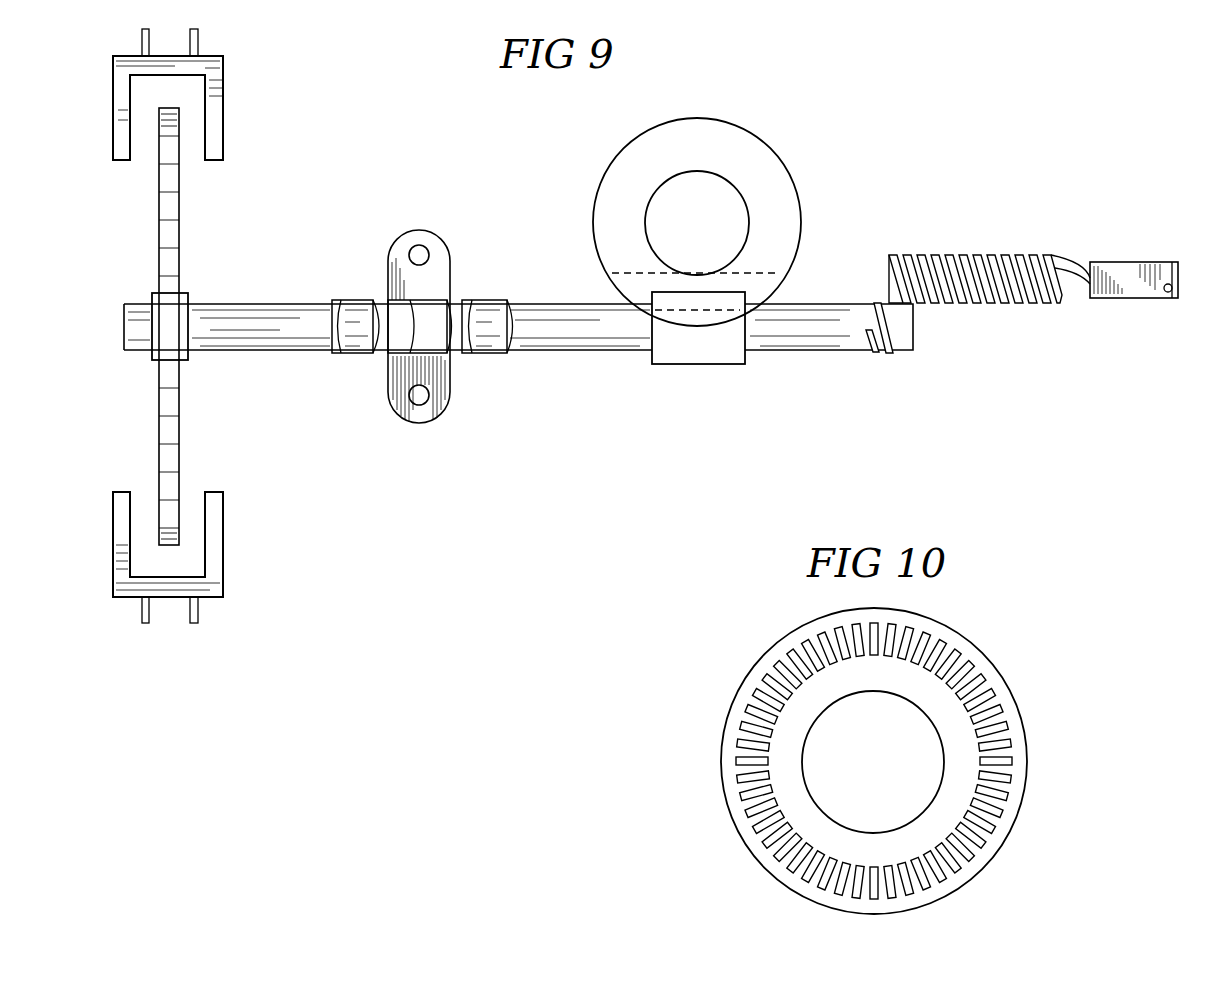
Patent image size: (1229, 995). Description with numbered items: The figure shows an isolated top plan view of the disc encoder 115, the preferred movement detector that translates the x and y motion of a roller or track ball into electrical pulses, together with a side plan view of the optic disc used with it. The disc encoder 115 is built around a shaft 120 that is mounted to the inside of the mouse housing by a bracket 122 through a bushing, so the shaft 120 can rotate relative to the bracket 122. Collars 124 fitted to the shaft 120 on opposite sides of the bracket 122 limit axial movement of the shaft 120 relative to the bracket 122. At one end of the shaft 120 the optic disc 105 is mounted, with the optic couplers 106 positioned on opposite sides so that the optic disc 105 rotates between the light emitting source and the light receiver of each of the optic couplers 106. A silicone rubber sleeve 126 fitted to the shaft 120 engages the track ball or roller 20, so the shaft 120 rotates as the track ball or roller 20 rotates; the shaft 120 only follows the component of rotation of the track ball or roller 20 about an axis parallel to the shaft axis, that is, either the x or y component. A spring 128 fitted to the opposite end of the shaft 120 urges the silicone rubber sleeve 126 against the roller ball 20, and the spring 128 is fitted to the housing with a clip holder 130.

In FIG. 9, the track ball or roller 20 is at (773, 147).
In FIG. 9, the optic disc 105 is at (157, 387).
In FIG. 10, the optic disc 105 is at (999, 674).
In FIG. 9, the optic couplers 106 is at (120, 97).
In FIG. 9, the disc encoder 115 is at (606, 375).
In FIG. 9, the shaft 120 is at (845, 340).
In FIG. 9, the bracket 122 is at (400, 388).
In FIG. 9, the collars 124 is at (357, 313).
In FIG. 9, the silicone rubber sleeve 126 is at (730, 353).
In FIG. 9, the spring 128 is at (967, 258).
In FIG. 9, the clip holder 130 is at (1117, 262).